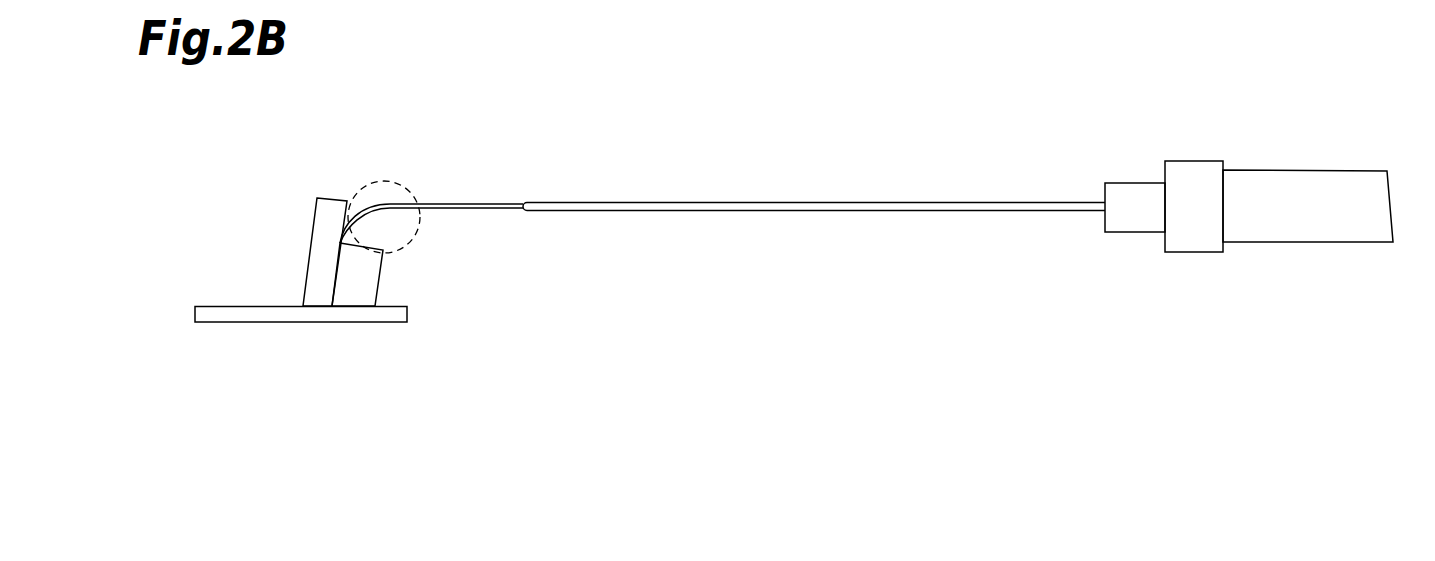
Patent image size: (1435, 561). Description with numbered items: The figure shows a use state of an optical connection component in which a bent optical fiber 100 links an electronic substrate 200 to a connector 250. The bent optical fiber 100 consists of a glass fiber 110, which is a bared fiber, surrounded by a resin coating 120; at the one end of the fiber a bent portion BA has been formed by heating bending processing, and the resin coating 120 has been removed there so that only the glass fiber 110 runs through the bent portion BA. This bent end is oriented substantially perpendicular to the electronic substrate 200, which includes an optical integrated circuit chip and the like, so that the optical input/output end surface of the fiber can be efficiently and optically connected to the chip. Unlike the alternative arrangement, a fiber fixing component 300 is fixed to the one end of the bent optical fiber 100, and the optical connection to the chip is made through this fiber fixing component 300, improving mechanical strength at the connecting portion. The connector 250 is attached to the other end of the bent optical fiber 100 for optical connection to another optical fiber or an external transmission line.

The bent optical fiber 100 is at (722, 163).
The glass fiber 110 is at (465, 208).
The resin coating 120 is at (522, 202).
The connector 250 is at (1295, 170).
The fiber fixing component 300 is at (416, 285).
The electronic substrate 200 is at (257, 323).
The bent portion BA is at (377, 180).